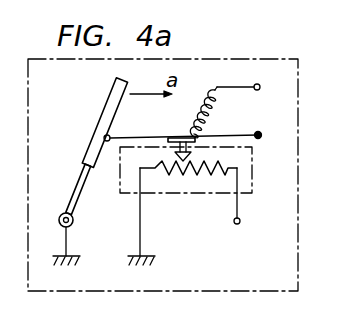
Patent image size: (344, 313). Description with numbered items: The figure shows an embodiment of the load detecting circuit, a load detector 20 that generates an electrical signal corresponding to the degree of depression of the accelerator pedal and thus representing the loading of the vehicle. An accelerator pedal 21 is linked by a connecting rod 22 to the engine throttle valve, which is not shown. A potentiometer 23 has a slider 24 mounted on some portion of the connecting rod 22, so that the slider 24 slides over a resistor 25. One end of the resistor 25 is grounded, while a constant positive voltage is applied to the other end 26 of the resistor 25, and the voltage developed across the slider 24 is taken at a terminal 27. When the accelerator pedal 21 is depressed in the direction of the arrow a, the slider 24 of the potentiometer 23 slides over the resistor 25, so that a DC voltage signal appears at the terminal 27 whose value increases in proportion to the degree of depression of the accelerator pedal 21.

The load detector 20 is at (299, 133).
The accelerator pedal 21 is at (97, 125).
The connecting rod 22 is at (223, 134).
The potentiometer 23 is at (119, 188).
The slider 24 is at (169, 137).
The resistor 25 is at (191, 176).
The other end of the resistor 26 is at (240, 223).
The terminal 27 is at (260, 87).